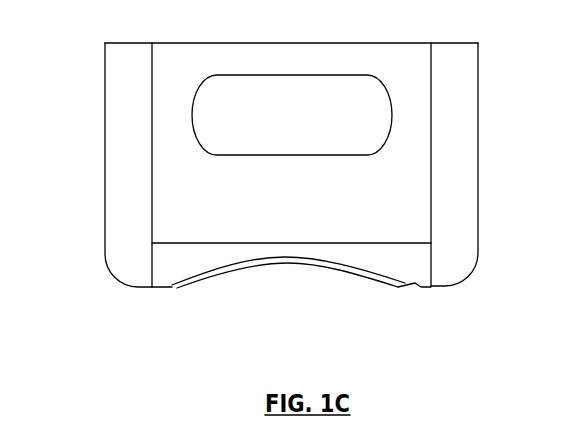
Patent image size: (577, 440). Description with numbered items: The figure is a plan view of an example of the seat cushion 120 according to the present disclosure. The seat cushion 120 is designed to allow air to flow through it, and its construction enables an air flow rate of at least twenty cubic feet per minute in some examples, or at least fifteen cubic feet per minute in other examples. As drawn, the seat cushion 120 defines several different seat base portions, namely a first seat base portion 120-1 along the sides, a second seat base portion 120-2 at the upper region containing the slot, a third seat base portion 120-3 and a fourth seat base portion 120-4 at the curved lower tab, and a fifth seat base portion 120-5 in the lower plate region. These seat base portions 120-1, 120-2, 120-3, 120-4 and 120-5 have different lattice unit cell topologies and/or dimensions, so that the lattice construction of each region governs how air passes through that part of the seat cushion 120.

The seat cushion 120 is at (478, 64).
The seat base portion 120-1 is at (115, 96).
The seat base portion 120-2 is at (277, 60).
The seat base portion 120-3 is at (335, 253).
The seat base portion 120-4 is at (238, 277).
The seat base portion 120-5 is at (373, 223).